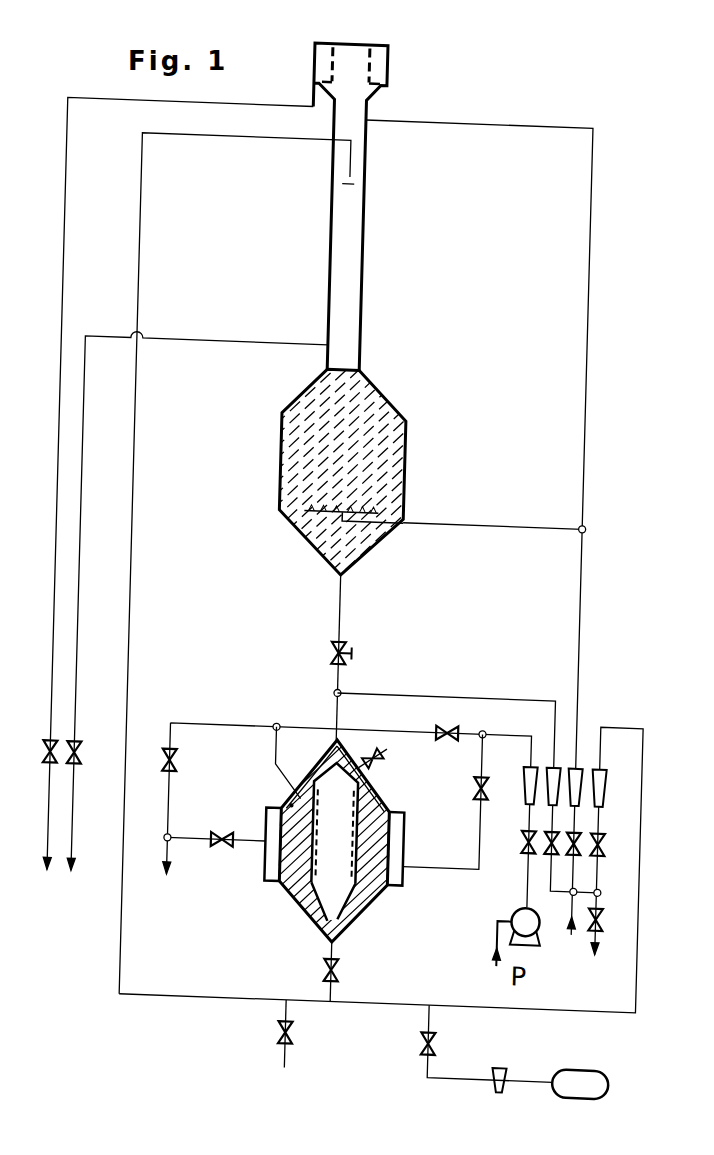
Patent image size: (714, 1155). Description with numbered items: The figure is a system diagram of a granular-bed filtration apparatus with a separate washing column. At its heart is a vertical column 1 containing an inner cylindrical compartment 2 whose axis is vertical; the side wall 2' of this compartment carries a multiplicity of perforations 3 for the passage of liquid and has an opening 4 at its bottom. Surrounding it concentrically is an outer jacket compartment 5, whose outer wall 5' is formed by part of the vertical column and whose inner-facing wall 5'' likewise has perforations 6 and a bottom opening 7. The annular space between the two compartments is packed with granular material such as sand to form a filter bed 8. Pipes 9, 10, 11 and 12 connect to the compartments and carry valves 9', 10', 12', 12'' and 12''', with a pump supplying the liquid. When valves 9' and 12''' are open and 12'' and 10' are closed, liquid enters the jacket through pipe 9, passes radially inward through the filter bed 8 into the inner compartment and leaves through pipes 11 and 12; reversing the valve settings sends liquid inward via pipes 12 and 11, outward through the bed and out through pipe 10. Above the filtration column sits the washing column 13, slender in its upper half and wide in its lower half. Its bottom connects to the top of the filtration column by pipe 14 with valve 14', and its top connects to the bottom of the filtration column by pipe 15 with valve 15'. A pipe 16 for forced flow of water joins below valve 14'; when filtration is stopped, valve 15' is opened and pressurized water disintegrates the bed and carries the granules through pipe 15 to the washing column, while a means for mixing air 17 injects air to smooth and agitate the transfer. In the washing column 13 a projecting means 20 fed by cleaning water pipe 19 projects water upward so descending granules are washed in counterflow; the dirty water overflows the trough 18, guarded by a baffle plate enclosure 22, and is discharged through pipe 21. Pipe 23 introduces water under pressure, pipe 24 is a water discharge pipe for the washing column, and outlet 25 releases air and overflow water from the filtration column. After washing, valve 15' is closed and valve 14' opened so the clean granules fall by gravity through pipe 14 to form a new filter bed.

The vertical column 1 is at (319, 926).
The inner cylindrical compartment 2 is at (403, 933).
The side wall 2' is at (334, 823).
The perforations 3 is at (298, 807).
The opening 4 is at (349, 925).
The outer jacket compartment 5 is at (333, 842).
The outer wall 5' is at (247, 878).
The wall 5'' is at (321, 869).
The perforations 6 is at (411, 818).
The opening 7 is at (290, 894).
The filter bed 8 is at (380, 889).
The pipe 9 is at (460, 801).
The valve 9' is at (460, 787).
The pipe 10 is at (215, 819).
The valve 10' is at (204, 872).
The pipe 11 is at (283, 747).
The pipe 12 is at (347, 780).
The valve 12' is at (511, 865).
The valve 12'' is at (431, 698).
The valve 12''' is at (202, 755).
The washing column 13 is at (382, 426).
The pipe 14 is at (313, 656).
The valve 14' is at (373, 644).
The pipe 15 is at (380, 895).
The valve 15' is at (357, 1007).
The pipe for forced flow of water 16 is at (458, 696).
The means for mixing air 17 is at (603, 1060).
The overflow trough 18 is at (374, 80).
The cleaning water pipe 19 is at (495, 518).
The projecting means 20 is at (313, 520).
The pipe 21 is at (57, 202).
The baffle plate enclosure 22 is at (358, 58).
The pipe 23 is at (489, 116).
The water discharge pipe 24 is at (255, 343).
The outlet 25 is at (382, 747).